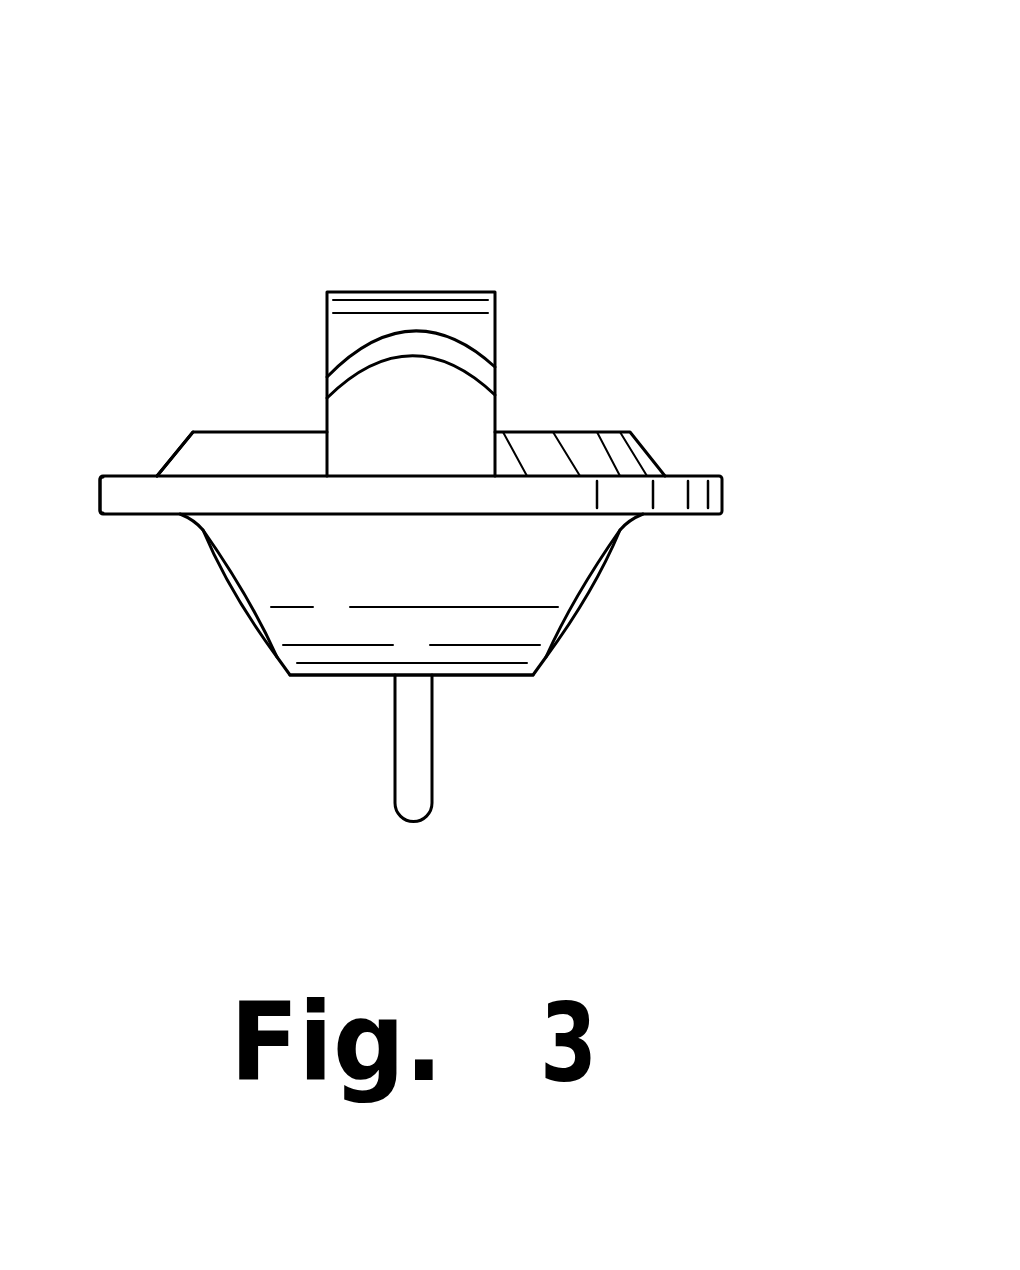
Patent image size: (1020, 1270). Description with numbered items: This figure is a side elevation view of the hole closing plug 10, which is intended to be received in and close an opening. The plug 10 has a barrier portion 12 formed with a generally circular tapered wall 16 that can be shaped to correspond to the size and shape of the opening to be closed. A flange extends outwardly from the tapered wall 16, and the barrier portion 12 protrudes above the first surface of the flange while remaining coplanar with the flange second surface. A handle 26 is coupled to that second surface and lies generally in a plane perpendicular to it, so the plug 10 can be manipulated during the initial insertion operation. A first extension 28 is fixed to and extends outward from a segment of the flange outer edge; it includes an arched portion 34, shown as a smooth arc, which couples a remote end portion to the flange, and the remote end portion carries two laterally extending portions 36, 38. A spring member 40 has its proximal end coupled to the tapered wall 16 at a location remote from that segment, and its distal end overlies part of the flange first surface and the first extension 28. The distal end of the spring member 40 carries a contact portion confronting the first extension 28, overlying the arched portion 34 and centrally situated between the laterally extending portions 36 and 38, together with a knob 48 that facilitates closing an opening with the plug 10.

The hole closing plug 10 is at (745, 162).
The barrier portion 12 is at (253, 440).
The tapered wall 16 is at (184, 459).
The spring member 40 is at (408, 305).
The knob 48 is at (440, 385).
The laterally extending portion 38 is at (693, 500).
The laterally extending portion 36 is at (120, 503).
The first extension 28 is at (522, 568).
The arched portion 34 is at (328, 680).
The handle 26 is at (415, 803).